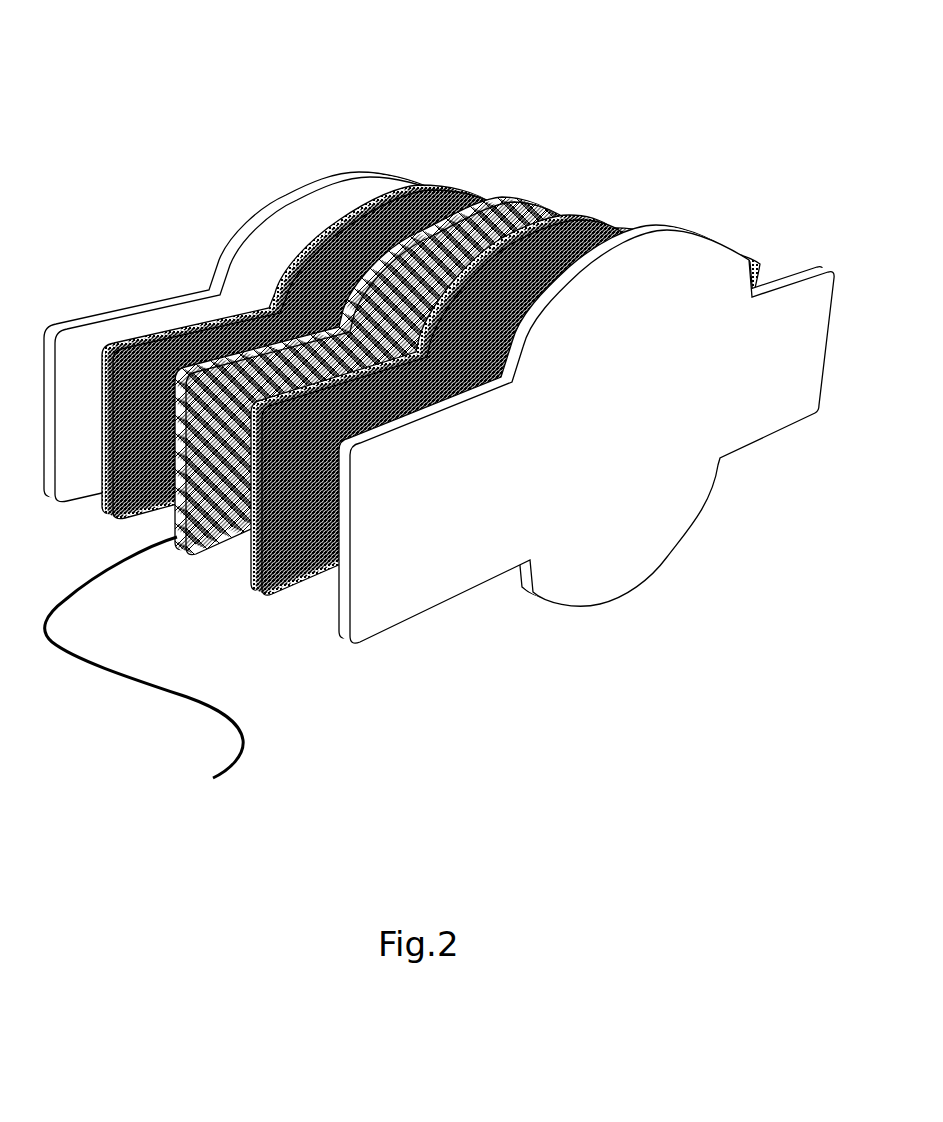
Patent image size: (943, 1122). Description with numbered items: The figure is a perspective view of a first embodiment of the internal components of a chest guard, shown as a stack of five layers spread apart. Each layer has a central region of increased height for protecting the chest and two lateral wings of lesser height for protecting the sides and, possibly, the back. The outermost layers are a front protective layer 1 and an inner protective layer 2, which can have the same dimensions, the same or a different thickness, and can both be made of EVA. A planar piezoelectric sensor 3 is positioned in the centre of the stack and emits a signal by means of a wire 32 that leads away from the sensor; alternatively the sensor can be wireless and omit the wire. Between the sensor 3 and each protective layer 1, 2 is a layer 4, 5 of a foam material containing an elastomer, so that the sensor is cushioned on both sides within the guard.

The front protective layer 1 is at (667, 258).
The inner protective layer 2 is at (355, 192).
The planar piezoelectric sensor 3 is at (493, 216).
The foam material layer 4 is at (577, 237).
The foam material layer 5 is at (428, 204).
The wire 32 is at (130, 677).